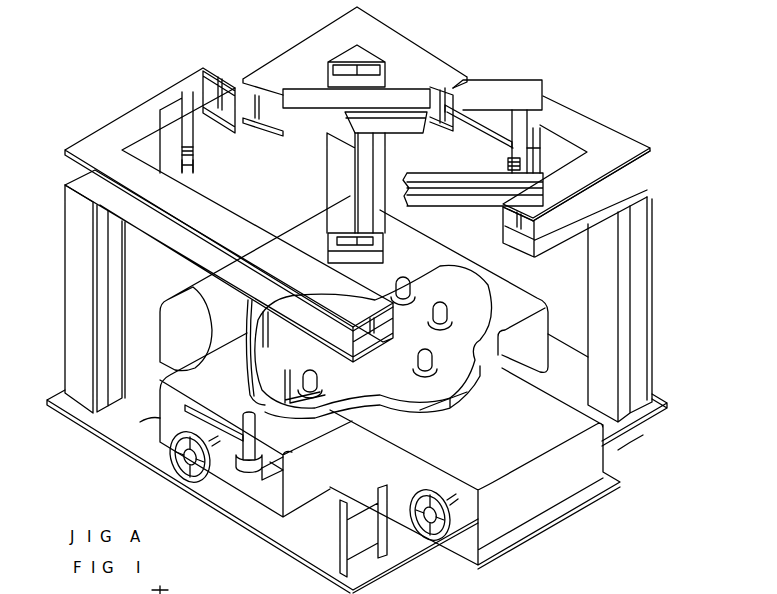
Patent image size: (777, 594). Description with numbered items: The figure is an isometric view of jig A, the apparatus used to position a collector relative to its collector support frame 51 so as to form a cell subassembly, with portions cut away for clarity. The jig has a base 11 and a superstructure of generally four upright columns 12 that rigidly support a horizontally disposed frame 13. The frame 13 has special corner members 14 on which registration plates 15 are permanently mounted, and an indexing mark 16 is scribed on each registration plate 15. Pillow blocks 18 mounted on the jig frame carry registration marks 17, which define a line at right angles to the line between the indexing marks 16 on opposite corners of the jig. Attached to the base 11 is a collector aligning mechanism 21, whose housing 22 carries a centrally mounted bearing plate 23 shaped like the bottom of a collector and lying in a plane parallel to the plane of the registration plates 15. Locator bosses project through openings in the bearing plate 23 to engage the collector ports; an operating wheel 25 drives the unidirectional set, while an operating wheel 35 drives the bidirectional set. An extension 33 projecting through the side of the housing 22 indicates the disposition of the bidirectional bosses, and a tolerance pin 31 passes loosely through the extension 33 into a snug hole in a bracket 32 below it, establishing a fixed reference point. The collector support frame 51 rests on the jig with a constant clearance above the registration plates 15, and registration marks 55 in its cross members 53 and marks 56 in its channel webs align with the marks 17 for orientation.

The base 11 is at (537, 531).
The upright columns 12 is at (65, 250).
The frame 13 is at (247, 77).
The corner members 14 is at (177, 167).
The registration plates 15 is at (189, 168).
The indexing mark 16 is at (188, 152).
The registration marks 17 is at (370, 60).
The pillow blocks 18 is at (403, 70).
The collector aligning mechanism 21 is at (155, 420).
The housing 22 is at (223, 394).
The bearing plate 23 is at (417, 332).
The operating wheel 25 is at (427, 535).
The tolerance pin 31 is at (253, 427).
The bracket 32 is at (262, 505).
The extension 33 is at (291, 455).
The operating wheel 35 is at (182, 486).
The collector support frame 51 is at (465, 78).
The cross members 53 is at (492, 142).
The registration marks 55 is at (512, 167).
The registration marks 56 is at (373, 113).